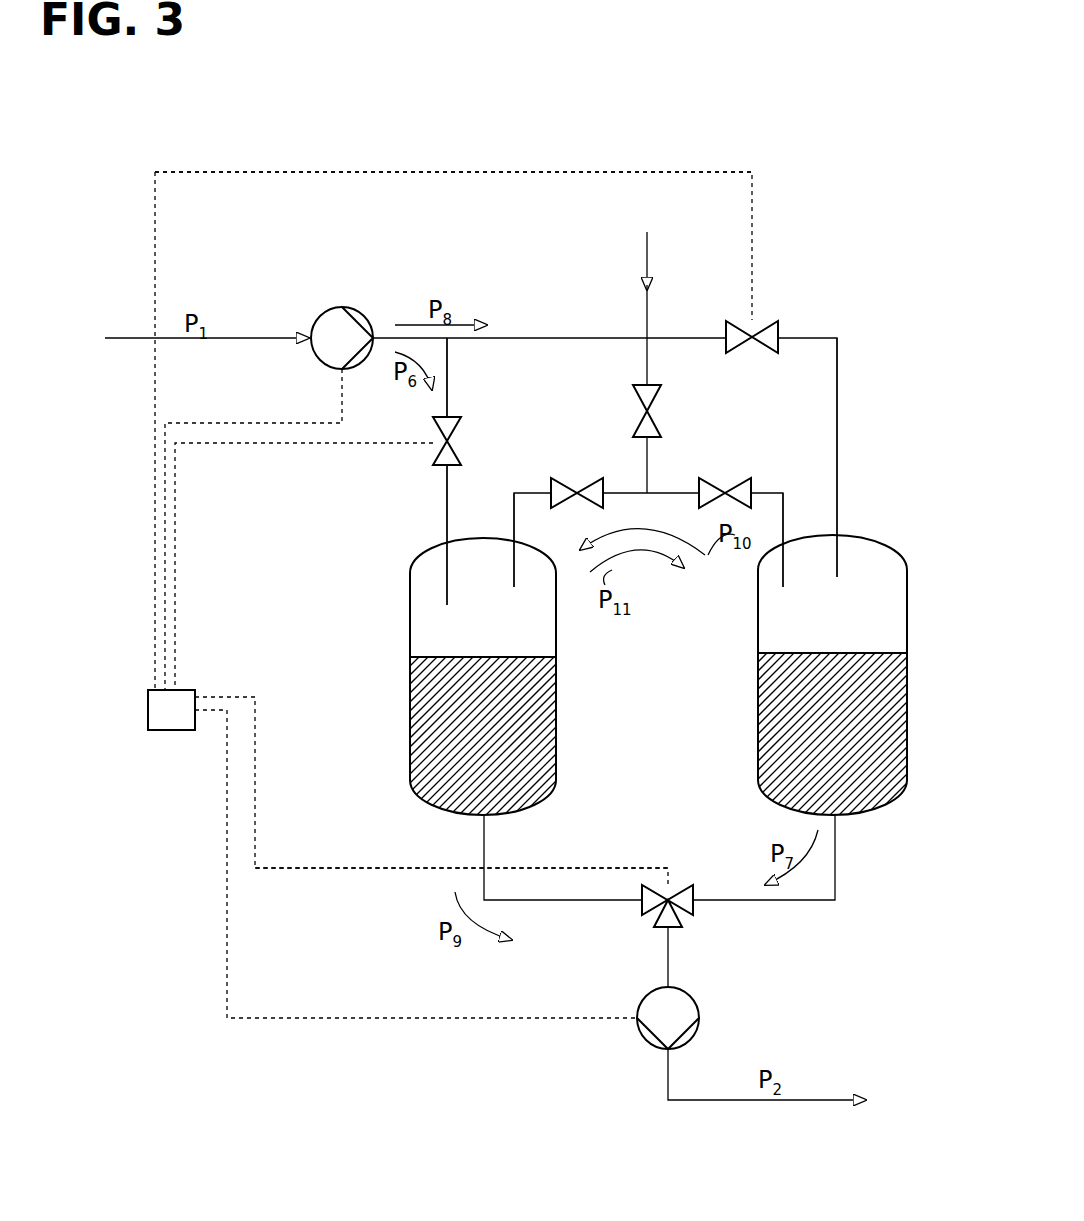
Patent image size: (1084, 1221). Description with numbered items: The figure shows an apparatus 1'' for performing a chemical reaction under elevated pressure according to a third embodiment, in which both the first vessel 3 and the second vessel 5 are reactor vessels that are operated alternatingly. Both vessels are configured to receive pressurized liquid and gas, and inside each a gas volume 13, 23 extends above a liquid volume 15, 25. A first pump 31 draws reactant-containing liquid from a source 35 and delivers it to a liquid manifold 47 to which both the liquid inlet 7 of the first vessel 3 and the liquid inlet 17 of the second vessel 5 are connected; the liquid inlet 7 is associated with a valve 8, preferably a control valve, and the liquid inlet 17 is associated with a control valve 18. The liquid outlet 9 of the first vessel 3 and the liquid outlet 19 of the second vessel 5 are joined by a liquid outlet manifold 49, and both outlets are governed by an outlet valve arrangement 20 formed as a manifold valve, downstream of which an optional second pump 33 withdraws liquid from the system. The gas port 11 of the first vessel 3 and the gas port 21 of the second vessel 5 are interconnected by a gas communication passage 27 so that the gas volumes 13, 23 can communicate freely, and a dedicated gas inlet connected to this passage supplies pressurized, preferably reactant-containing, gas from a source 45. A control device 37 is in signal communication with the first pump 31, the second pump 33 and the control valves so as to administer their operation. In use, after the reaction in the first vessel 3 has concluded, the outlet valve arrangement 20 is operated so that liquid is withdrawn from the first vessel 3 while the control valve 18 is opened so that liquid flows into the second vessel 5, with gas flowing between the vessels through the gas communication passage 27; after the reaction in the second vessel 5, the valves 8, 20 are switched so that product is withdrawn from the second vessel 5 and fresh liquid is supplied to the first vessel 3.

The apparatus 1'' is at (515, 114).
The first vessel 3 is at (452, 817).
The second vessel 5 is at (763, 800).
The liquid inlet 7 is at (443, 540).
The valve 8 is at (433, 440).
The liquid outlet 9 is at (488, 820).
The gas port 11 is at (513, 538).
The gas volume 13 is at (430, 622).
The liquid volume 15 is at (428, 706).
The liquid inlet 17 is at (842, 537).
The control valve 18 is at (770, 322).
The liquid outlet 19 is at (840, 820).
The outlet valve arrangement 20 is at (688, 917).
The gas port 21 is at (786, 538).
The gas volume 23 is at (882, 608).
The liquid volume 25 is at (874, 717).
The gas communication passage 27 is at (630, 493).
The first pump 31 is at (340, 307).
The second pump 33 is at (700, 1012).
The source 35 is at (178, 339).
The control device 37 is at (168, 730).
The source 45 is at (645, 294).
The liquid manifold 47 is at (463, 349).
The liquid outlet manifold 49 is at (705, 868).